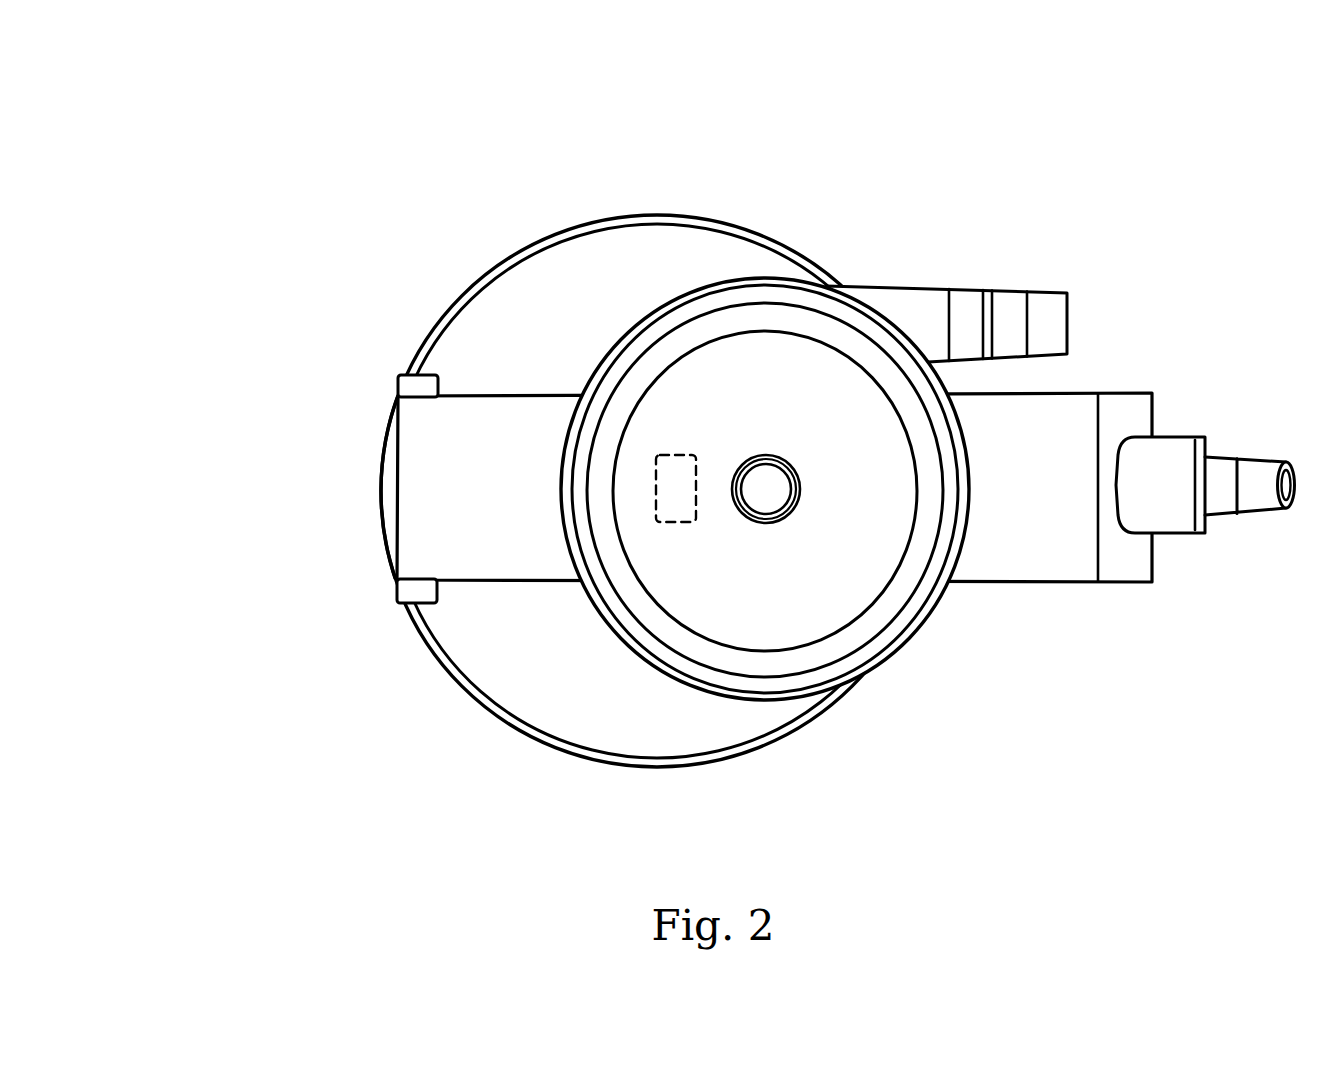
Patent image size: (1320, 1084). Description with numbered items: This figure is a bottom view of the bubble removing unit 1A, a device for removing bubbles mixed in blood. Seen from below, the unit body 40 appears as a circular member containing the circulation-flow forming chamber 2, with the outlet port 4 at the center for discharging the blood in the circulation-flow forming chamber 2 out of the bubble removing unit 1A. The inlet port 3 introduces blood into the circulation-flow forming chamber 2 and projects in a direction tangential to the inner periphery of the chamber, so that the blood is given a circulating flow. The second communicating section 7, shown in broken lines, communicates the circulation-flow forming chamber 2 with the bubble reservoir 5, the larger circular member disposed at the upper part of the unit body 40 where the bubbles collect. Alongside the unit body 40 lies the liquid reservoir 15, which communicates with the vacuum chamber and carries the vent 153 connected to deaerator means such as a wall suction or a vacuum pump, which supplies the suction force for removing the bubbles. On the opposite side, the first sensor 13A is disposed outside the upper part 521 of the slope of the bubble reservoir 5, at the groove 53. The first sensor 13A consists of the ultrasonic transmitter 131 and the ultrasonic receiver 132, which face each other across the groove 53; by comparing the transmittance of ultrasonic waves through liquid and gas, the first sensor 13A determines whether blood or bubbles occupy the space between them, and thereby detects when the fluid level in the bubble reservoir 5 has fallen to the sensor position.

The bubble removing unit 1A is at (660, 172).
The circulation-flow forming chamber 2 is at (859, 584).
The inlet port 3 is at (1012, 308).
The outlet port 4 is at (771, 487).
The bubble reservoir 5 is at (588, 702).
The second communicating section 7 is at (686, 448).
The first sensor 13A is at (261, 489).
The liquid reservoir 15 is at (858, 438).
The unit body 40 is at (941, 602).
The groove 53 is at (470, 510).
The ultrasonic transmitter 131 is at (412, 384).
The ultrasonic receiver 132 is at (410, 593).
The vent 153 is at (1263, 470).
The upper part of the slope 521 is at (418, 435).